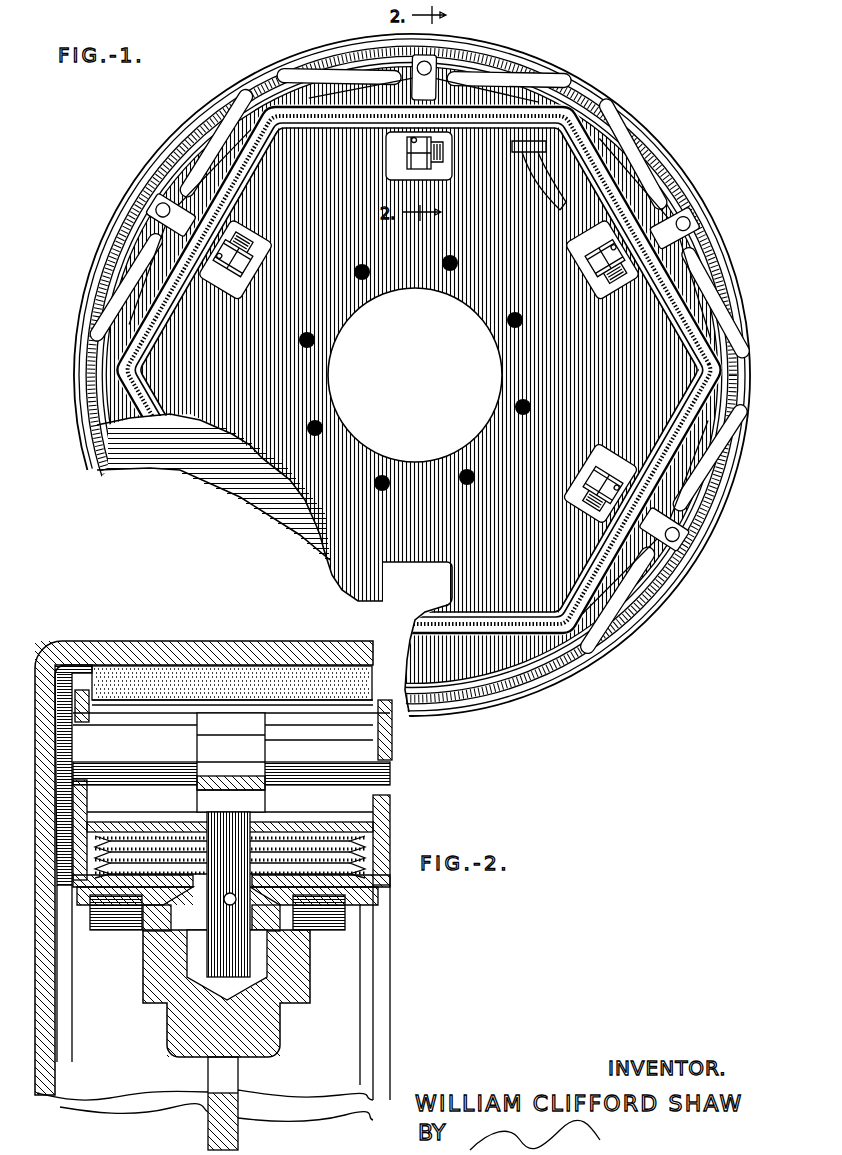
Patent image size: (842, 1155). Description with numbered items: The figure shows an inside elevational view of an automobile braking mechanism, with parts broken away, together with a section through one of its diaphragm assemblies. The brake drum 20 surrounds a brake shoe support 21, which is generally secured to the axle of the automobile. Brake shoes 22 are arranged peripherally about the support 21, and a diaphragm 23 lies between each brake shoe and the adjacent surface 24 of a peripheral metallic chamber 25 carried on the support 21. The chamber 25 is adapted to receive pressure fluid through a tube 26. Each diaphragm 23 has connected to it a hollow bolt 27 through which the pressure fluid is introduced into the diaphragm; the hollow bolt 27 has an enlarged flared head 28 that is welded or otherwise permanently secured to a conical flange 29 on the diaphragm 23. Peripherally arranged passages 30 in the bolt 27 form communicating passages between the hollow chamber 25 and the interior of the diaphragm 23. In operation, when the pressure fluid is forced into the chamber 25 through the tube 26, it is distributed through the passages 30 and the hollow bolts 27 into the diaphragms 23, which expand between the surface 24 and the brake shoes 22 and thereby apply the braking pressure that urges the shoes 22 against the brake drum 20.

In FIG. 1, the brake drum 20 is at (565, 77).
In FIG. 2, the brake drum 20 is at (224, 654).
In FIG. 1, the brake shoe support 21 is at (648, 330).
In FIG. 1, the brake shoes 22 is at (653, 185).
In FIG. 1, the diaphragm 23 is at (312, 110).
In FIG. 2, the diaphragm 23 is at (332, 840).
In FIG. 1, the adjacent surface 24 is at (252, 163).
In FIG. 2, the adjacent surface 24 is at (232, 683).
In FIG. 1, the peripheral metallic chamber 25 is at (190, 293).
In FIG. 2, the peripheral metallic chamber 25 is at (163, 898).
In FIG. 1, the tube 26 is at (530, 188).
In FIG. 1, the hollow bolt 27 is at (418, 142).
In FIG. 2, the hollow bolt 27 is at (253, 959).
In FIG. 1, the enlarged flared head 28 is at (218, 222).
In FIG. 2, the enlarged flared head 28 is at (352, 906).
In FIG. 1, the conical flange 29 is at (418, 129).
In FIG. 2, the conical flange 29 is at (350, 935).
In FIG. 1, the peripherally arranged passages 30 is at (442, 148).
In FIG. 2, the peripherally arranged passages 30 is at (228, 981).